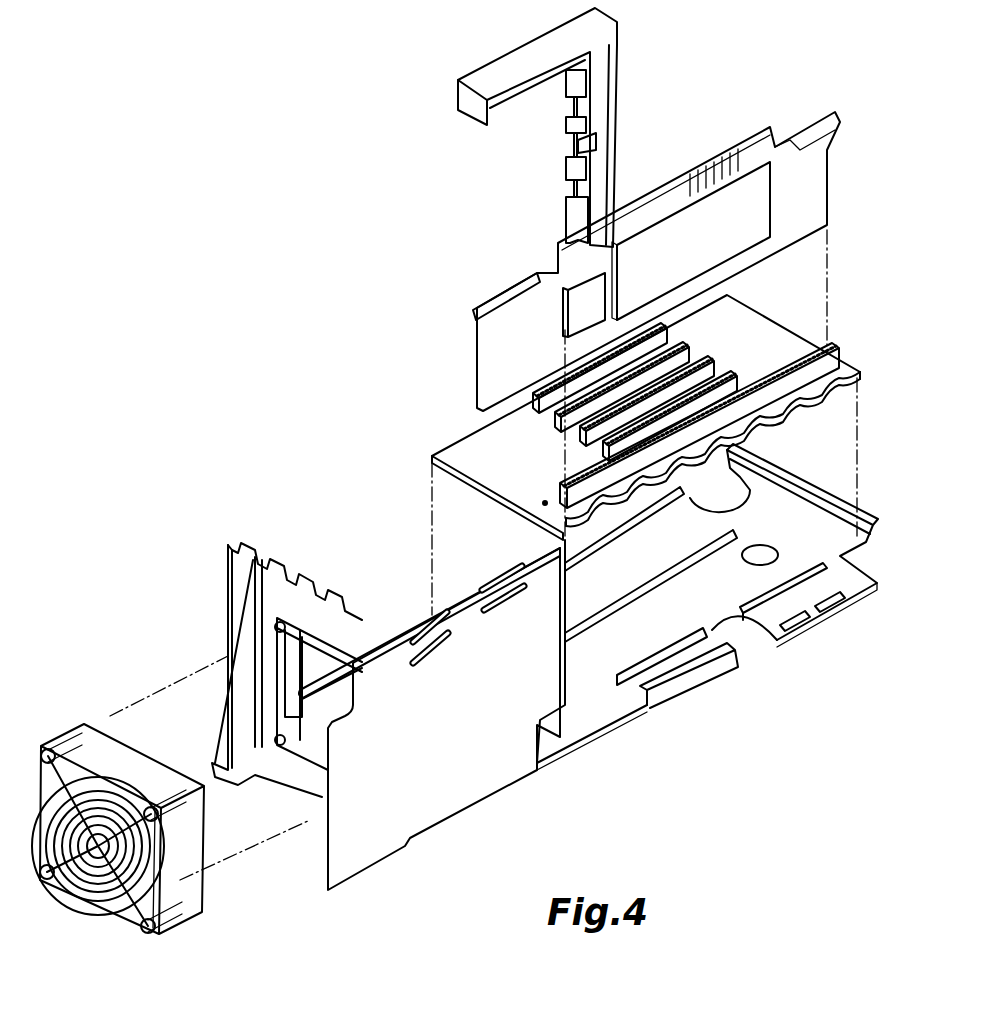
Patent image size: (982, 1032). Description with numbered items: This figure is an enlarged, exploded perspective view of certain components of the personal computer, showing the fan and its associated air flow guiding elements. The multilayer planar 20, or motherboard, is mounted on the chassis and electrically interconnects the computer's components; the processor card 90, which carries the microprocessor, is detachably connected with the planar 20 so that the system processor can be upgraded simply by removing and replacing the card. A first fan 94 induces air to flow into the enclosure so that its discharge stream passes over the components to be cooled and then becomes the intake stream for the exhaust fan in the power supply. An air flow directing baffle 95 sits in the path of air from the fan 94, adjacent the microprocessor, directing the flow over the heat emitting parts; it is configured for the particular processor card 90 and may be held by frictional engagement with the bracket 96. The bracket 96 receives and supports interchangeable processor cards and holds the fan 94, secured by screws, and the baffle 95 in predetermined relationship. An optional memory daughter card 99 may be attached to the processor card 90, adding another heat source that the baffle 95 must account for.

The multilayer planar 20 is at (467, 447).
The processor card 90 is at (656, 253).
The first fan 94 is at (104, 718).
The baffle 95 is at (467, 116).
The bracket 96 is at (232, 563).
The memory daughter card 99 is at (790, 206).